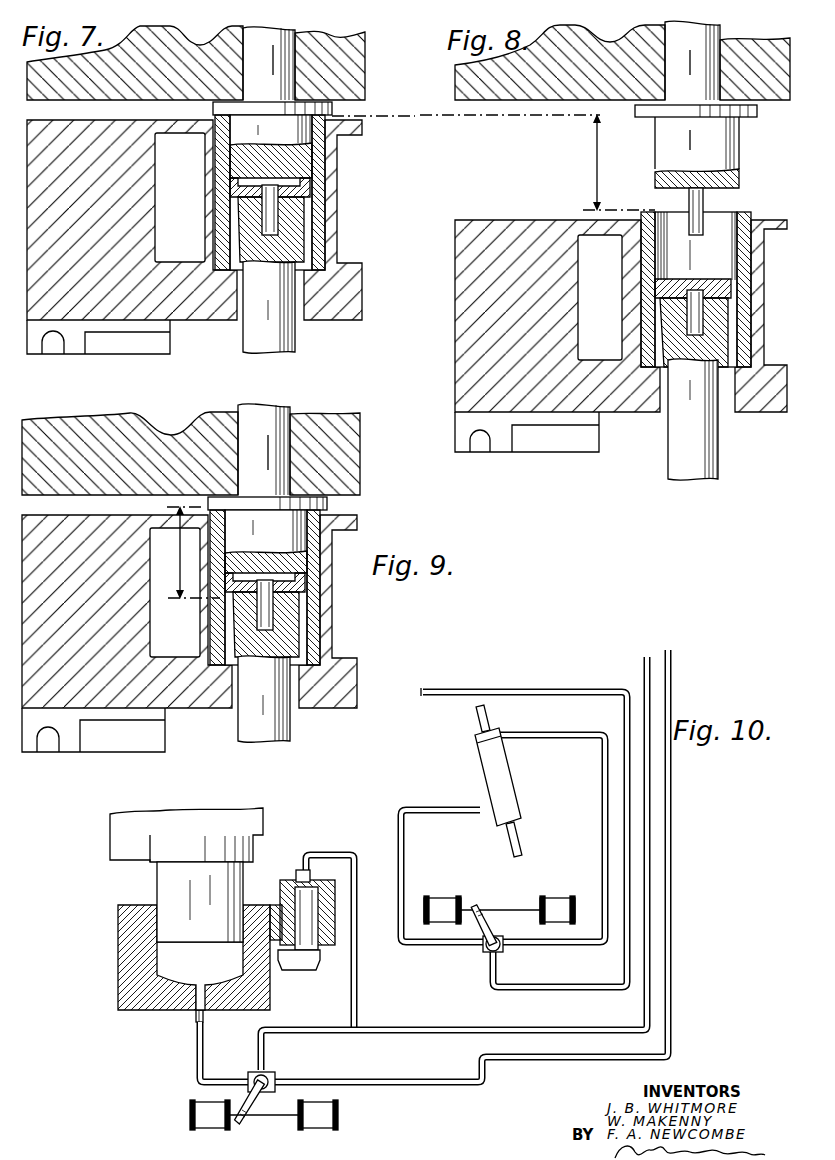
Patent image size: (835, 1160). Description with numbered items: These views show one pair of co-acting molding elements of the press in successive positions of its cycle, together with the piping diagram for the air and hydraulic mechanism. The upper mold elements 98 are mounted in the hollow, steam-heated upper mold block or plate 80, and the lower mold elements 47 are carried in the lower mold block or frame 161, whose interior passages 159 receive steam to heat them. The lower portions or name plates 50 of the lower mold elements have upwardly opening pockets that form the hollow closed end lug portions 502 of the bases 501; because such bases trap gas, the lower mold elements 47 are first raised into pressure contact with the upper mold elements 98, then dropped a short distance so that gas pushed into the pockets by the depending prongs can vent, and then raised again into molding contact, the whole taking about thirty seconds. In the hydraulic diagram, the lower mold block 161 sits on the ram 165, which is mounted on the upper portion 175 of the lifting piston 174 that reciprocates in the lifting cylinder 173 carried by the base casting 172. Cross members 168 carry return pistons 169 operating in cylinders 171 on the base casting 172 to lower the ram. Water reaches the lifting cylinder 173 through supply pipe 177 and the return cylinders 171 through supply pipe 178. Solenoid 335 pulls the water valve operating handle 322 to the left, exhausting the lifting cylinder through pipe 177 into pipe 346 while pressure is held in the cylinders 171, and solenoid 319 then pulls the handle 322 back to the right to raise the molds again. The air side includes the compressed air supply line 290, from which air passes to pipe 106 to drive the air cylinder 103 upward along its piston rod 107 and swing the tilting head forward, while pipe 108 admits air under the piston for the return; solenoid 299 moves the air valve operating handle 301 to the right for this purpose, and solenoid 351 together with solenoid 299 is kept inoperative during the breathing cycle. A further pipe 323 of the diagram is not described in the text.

In FIG. 7, the hollow upper mold block or plate 80 is at (334, 38).
In FIG. 9, the hollow upper mold block or plate 80 is at (193, 440).
In FIG. 8, the hollow upper mold block or plate 80 is at (750, 54).
In FIG. 7, the upper mold elements 98 is at (302, 160).
In FIG. 9, the upper mold elements 98 is at (301, 534).
In FIG. 8, the upper mold elements 98 is at (724, 146).
In FIG. 7, the lower mold elements 47 is at (325, 178).
In FIG. 9, the lower mold elements 47 is at (312, 550).
In FIG. 8, the lower mold elements 47 is at (651, 214).
In FIG. 7, the bases 501 is at (312, 193).
In FIG. 9, the bases 501 is at (336, 605).
In FIG. 8, the bases 501 is at (722, 292).
In FIG. 7, the hollow cylindrical closed end lug portion 502 is at (302, 230).
In FIG. 9, the hollow cylindrical closed end lug portion 502 is at (322, 624).
In FIG. 8, the hollow cylindrical closed end lug portion 502 is at (685, 330).
In FIG. 7, the lower mold block or frame 161 is at (348, 306).
In FIG. 9, the lower mold block or frame 161 is at (209, 633).
In FIG. 8, the lower mold block or frame 161 is at (468, 383).
In FIG. 7, the interior passages 159 is at (180, 262).
In FIG. 9, the interior passages 159 is at (182, 639).
In FIG. 8, the interior passages 159 is at (583, 250).
In FIG. 7, the lower portions or name plates 50 is at (282, 272).
In FIG. 9, the lower portions or name plates 50 is at (285, 704).
In FIG. 8, the lower portions or name plates 50 is at (700, 365).
In FIG. 10, the compressed air supply line 290 is at (620, 674).
In FIG. 10, the pipe 106 is at (565, 735).
In FIG. 10, the air cylinder 103 is at (505, 778).
In FIG. 10, the pipe 108 is at (445, 810).
In FIG. 10, the piston and associated rod 107 is at (516, 838).
In FIG. 10, the solenoid 351 is at (446, 897).
In FIG. 10, the air valve operating handle 301 is at (481, 913).
In FIG. 10, the solenoid 299 is at (560, 897).
In FIG. 10, the pipe 346 is at (672, 857).
In FIG. 10, the pipe 323 is at (652, 910).
In FIG. 10, the ram 165 is at (255, 818).
In FIG. 10, the upper portion of the lifting piston 175 is at (252, 852).
In FIG. 10, the supply pipe 178 is at (356, 854).
In FIG. 10, the lifting piston 174 is at (180, 880).
In FIG. 10, the cylinders 171 is at (282, 888).
In FIG. 10, the lifting cylinder 173 is at (136, 905).
In FIG. 10, the base casting 172 is at (125, 990).
In FIG. 10, the cross members 168 is at (292, 965).
In FIG. 10, the pistons 169 is at (310, 942).
In FIG. 10, the supply pipe 177 is at (195, 1058).
In FIG. 10, the solenoid 335 is at (210, 1120).
In FIG. 10, the water valve operating handle 322 is at (258, 1108).
In FIG. 10, the solenoid 319 is at (320, 1120).